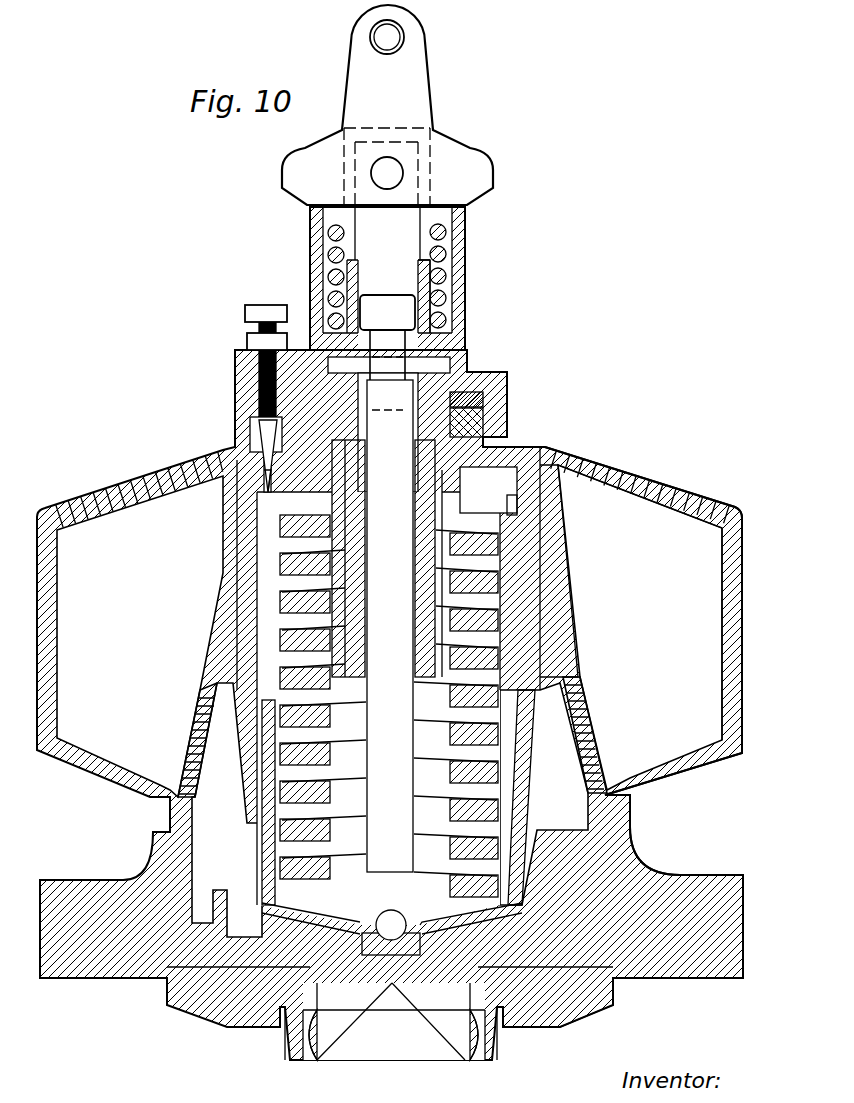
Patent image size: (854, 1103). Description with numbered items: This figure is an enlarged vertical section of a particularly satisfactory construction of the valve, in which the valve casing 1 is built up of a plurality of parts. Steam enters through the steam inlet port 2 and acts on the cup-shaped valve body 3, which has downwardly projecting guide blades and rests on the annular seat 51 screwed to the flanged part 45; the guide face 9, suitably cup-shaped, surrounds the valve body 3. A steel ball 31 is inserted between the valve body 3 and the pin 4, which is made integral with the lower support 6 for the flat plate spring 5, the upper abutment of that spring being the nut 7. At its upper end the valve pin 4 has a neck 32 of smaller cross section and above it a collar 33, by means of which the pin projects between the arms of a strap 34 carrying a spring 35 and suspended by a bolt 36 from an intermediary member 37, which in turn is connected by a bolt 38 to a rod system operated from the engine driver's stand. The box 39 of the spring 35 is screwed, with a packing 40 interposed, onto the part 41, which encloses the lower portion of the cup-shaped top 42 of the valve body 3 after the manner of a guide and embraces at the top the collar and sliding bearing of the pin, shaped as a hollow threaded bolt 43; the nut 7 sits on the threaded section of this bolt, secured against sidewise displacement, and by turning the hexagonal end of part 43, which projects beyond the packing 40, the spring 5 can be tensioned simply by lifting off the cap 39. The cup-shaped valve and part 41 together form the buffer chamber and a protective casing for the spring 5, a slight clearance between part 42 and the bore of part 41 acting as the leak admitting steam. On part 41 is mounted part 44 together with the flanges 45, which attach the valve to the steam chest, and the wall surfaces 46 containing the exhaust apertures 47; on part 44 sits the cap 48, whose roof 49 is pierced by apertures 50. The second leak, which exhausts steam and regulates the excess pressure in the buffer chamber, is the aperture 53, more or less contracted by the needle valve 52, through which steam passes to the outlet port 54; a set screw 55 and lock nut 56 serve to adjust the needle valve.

The valve casing 1 is at (100, 987).
The steam inlet port 2 is at (370, 1039).
The valve body 3 is at (428, 1007).
The valve pin 4 is at (390, 614).
The flat plate spring 5 is at (490, 690).
The lower support 6 is at (483, 895).
The nut 7 is at (560, 463).
The guide face 9 is at (257, 887).
The steel ball 31 is at (396, 920).
The neck 32 is at (395, 335).
The collar 33 is at (405, 305).
The strap 34 is at (440, 278).
The spring 35 is at (445, 245).
The bolt 36 is at (402, 163).
The intermediary member 37 is at (398, 37).
The bolt 38 is at (428, 31).
The box 39 is at (315, 248).
The packing 40 is at (497, 368).
The part 41 is at (437, 442).
The cup-shaped top 42 is at (540, 805).
The hollow threaded bolt 43 is at (472, 400).
The part 44 is at (575, 637).
The flanges 45 is at (667, 897).
The wall surfaces 46 is at (190, 723).
The exhaust apertures 47 is at (593, 762).
The cap 48 is at (730, 600).
The roof 49 is at (690, 515).
The apertures 50 is at (647, 497).
The annular seat 51 is at (592, 1013).
The needle valve 52 is at (262, 432).
The aperture 53 is at (256, 468).
The outlet port 54 is at (246, 437).
The set screw 55 is at (270, 313).
The lock nut 56 is at (245, 342).